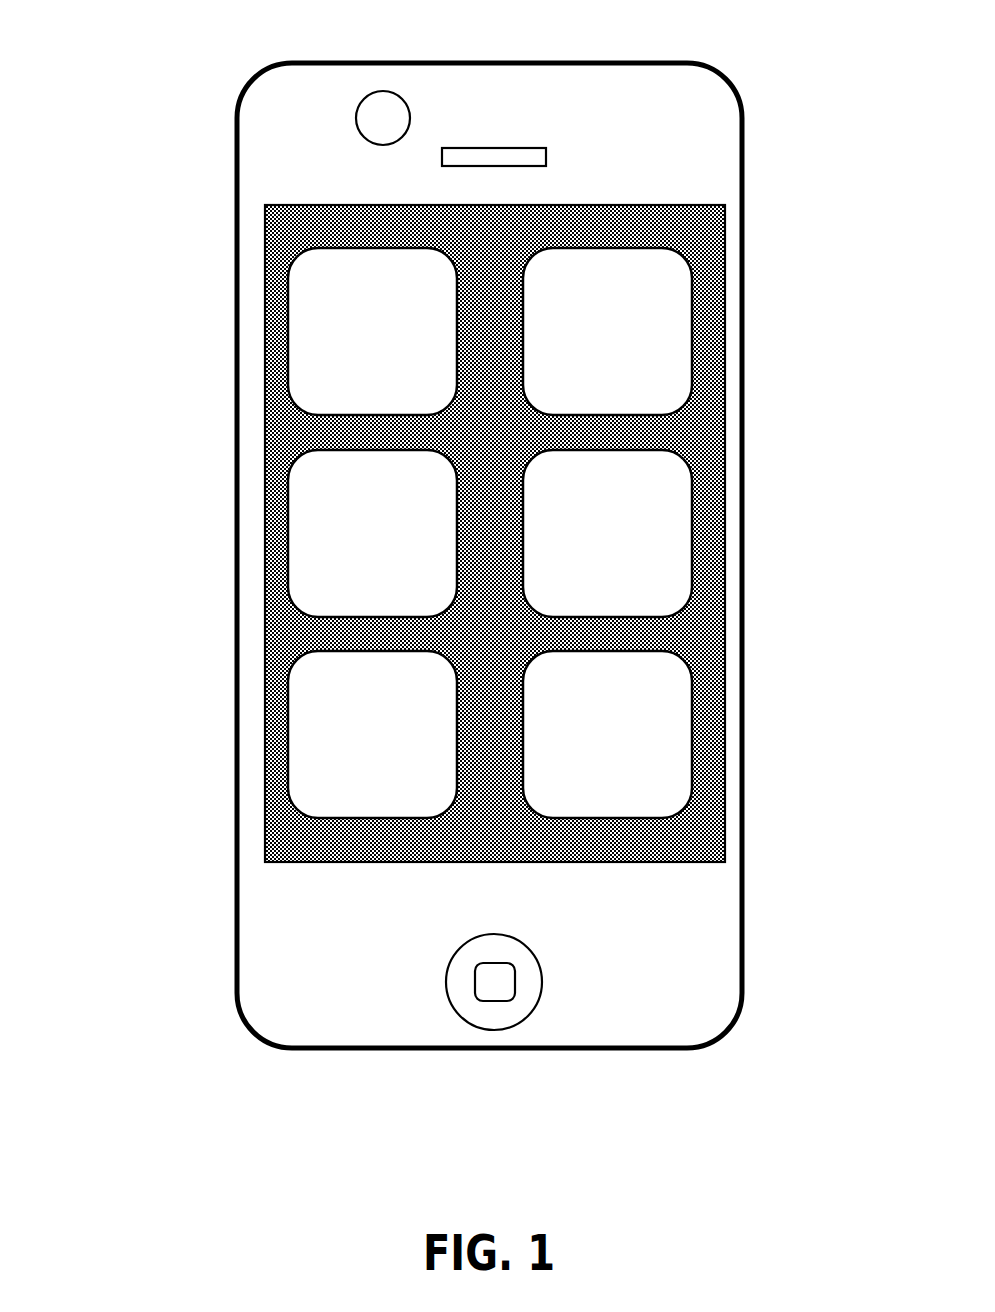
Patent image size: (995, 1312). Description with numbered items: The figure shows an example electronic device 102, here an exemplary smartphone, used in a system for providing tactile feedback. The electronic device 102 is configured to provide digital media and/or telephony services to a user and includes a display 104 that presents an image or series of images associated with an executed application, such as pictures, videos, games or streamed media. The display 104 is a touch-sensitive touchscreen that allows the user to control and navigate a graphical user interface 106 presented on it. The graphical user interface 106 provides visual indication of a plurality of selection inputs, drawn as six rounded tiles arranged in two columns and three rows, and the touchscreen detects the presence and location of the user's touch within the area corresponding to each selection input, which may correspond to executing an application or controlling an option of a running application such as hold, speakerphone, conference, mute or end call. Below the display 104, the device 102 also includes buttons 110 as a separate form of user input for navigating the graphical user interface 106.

The electronic device 102 is at (198, 128).
The display 104 is at (292, 433).
The graphical user interface 106 is at (697, 448).
The buttons 110 is at (510, 998).